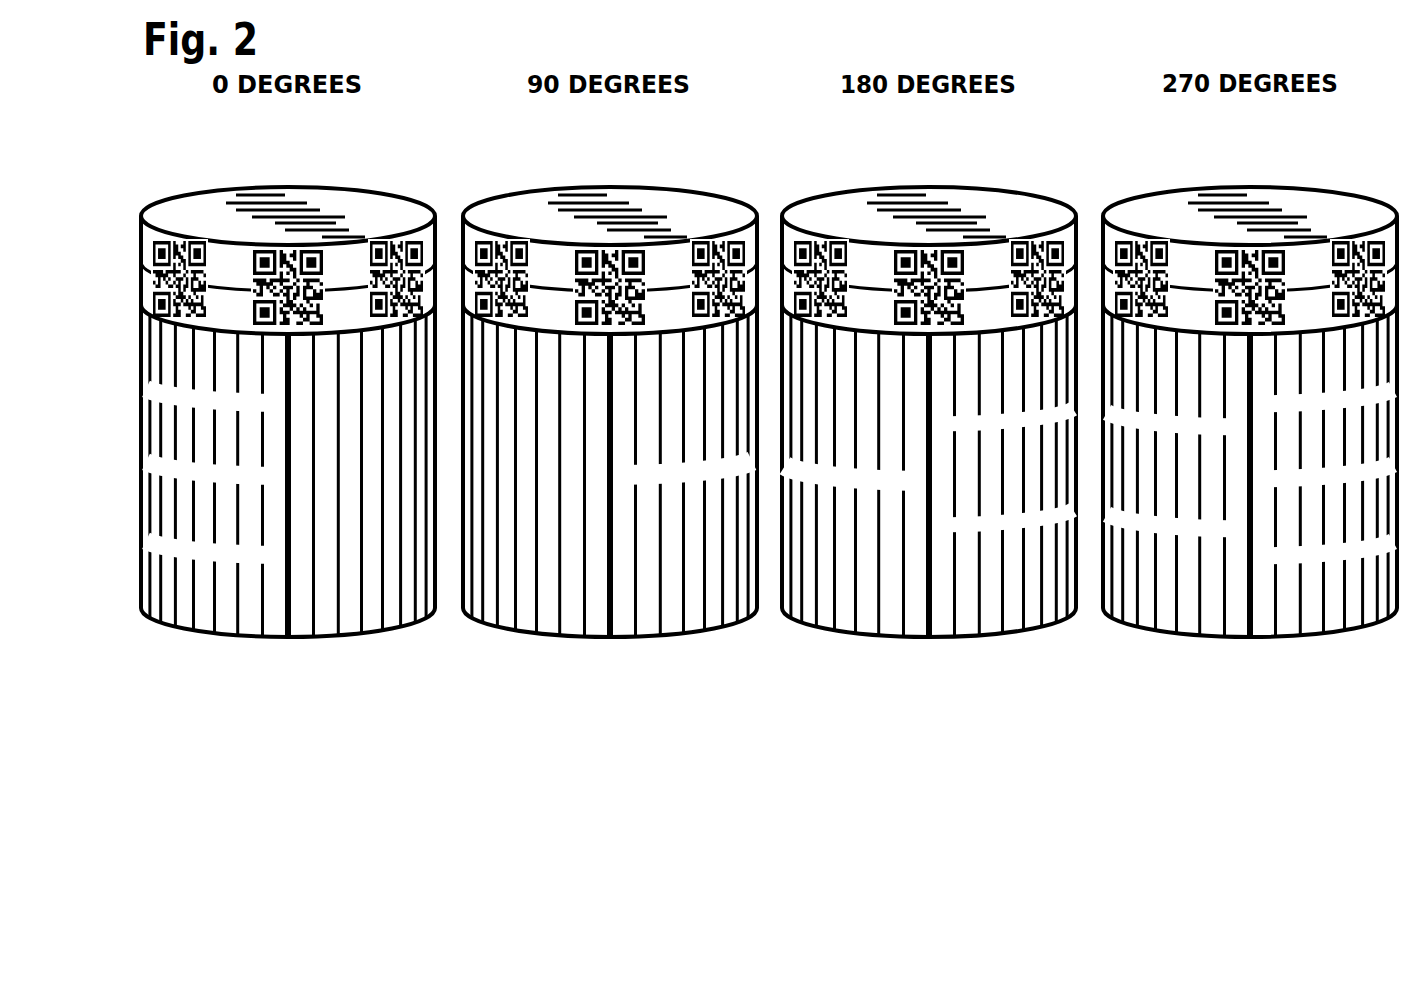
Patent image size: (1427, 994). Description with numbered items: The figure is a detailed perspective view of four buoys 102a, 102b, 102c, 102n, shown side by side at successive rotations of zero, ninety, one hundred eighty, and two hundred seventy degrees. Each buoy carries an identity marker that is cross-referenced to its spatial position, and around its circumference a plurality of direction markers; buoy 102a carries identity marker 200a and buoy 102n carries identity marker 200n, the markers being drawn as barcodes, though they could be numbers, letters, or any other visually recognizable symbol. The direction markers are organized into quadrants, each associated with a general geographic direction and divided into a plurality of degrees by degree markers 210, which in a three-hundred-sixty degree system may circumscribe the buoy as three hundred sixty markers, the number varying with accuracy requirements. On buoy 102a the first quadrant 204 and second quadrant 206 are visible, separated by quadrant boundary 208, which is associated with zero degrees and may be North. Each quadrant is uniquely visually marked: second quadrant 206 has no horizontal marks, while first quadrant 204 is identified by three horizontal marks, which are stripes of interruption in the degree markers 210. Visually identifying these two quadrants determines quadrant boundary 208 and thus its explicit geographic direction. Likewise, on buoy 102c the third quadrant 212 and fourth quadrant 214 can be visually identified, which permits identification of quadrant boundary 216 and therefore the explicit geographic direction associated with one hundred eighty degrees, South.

The buoy 102a is at (282, 195).
The buoy 102b is at (604, 195).
The buoy 102c is at (923, 195).
The buoy 102n is at (1238, 196).
The identity marker 200a is at (398, 258).
The identity marker 200n is at (1366, 260).
The first quadrant 204 is at (230, 641).
The second quadrant 206 is at (373, 641).
The quadrant boundary 208 is at (288, 638).
The degree markers 210 is at (163, 622).
The third quadrant 212 is at (851, 641).
The fourth quadrant 214 is at (1009, 641).
The quadrant boundary 216 is at (930, 638).